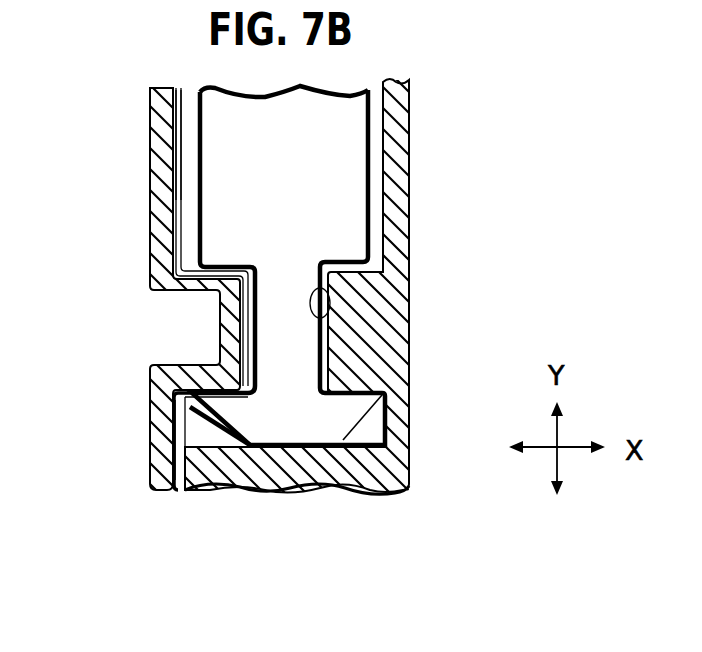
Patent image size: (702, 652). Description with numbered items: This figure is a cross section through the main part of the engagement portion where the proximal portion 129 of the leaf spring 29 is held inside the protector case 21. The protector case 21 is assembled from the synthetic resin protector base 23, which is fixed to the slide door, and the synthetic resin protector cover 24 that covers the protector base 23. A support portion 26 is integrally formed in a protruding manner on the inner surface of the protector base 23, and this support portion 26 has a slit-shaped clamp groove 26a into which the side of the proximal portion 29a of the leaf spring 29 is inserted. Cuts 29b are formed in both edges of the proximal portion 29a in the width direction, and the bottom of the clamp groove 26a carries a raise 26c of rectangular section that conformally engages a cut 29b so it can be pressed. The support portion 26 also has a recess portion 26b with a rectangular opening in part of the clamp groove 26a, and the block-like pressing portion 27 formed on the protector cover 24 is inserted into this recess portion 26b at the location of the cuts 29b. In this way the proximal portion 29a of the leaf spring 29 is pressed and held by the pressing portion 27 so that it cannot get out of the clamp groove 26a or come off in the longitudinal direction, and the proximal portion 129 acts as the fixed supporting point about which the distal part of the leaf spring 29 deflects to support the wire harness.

The protector case 21 is at (149, 126).
The protector base 23 is at (398, 163).
The protector cover 24 is at (160, 185).
The support portion 26 is at (177, 236).
The clamp groove 26a is at (183, 150).
The recess portion 26b is at (180, 363).
The raise 26c is at (322, 316).
The pressing portion 27 is at (222, 320).
The leaf spring 29 is at (345, 117).
The proximal portion 29a is at (284, 360).
The cut 29b is at (250, 328).
The proximal portion 129 is at (395, 569).